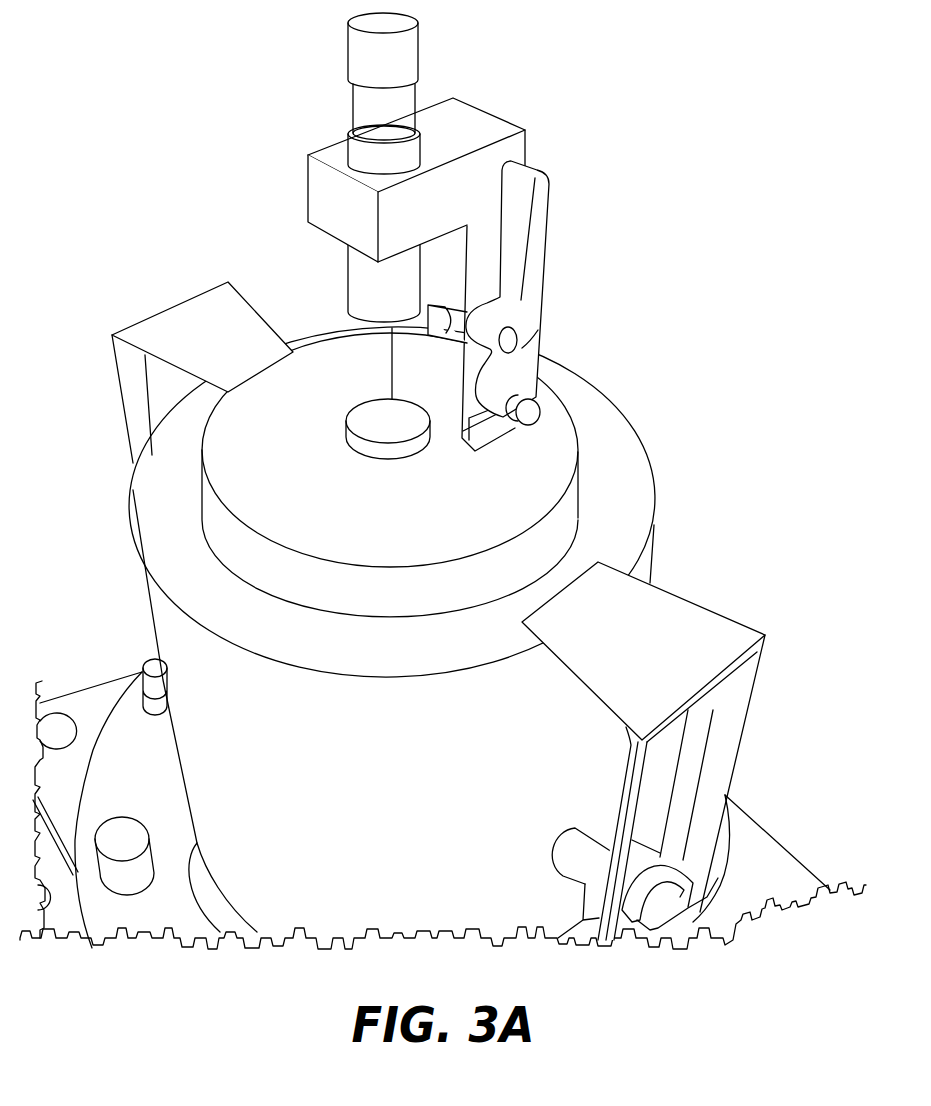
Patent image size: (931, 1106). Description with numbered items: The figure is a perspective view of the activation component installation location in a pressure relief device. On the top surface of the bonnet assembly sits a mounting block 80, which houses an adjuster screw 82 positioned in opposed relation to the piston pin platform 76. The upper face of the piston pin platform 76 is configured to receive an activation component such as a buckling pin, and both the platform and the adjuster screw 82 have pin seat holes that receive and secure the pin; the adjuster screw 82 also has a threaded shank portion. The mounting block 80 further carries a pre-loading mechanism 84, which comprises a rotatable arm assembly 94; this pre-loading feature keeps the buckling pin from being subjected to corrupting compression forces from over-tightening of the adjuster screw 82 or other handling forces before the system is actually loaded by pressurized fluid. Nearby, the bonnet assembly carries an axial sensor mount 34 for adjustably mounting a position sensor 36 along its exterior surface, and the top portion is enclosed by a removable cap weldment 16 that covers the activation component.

The cap weldment 16 is at (665, 615).
The axial sensor mount 34 is at (727, 733).
The position sensor 36 is at (693, 922).
The piston pin platform 76 is at (370, 418).
The mounting block 80 is at (493, 157).
The adjuster screw 82 is at (400, 62).
The pre-loading mechanism 84 is at (533, 270).
The rotatable arm assembly 94 is at (530, 338).